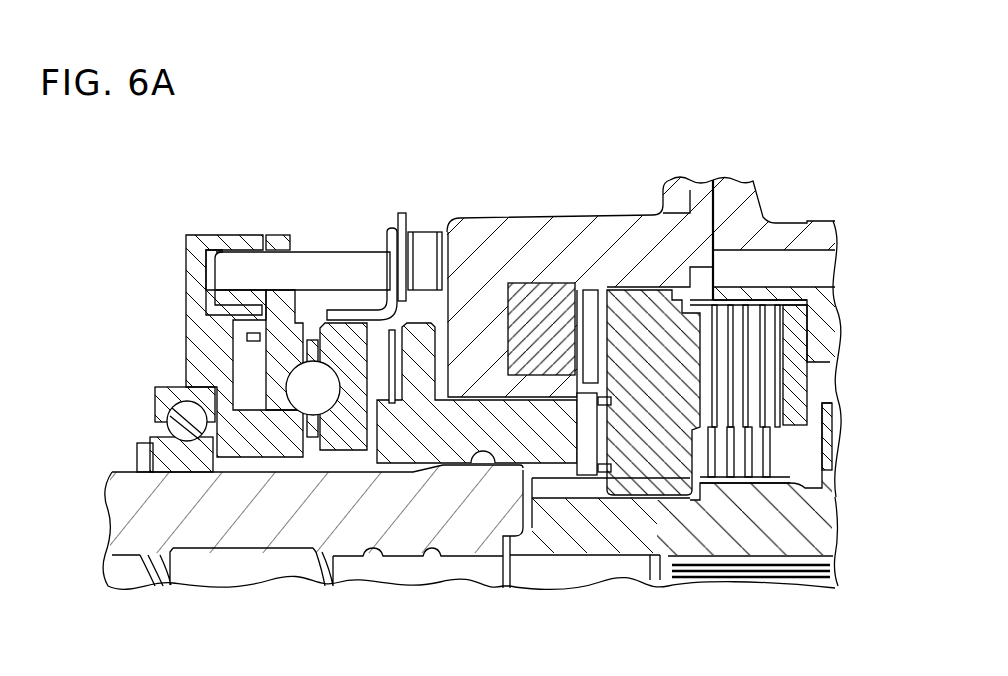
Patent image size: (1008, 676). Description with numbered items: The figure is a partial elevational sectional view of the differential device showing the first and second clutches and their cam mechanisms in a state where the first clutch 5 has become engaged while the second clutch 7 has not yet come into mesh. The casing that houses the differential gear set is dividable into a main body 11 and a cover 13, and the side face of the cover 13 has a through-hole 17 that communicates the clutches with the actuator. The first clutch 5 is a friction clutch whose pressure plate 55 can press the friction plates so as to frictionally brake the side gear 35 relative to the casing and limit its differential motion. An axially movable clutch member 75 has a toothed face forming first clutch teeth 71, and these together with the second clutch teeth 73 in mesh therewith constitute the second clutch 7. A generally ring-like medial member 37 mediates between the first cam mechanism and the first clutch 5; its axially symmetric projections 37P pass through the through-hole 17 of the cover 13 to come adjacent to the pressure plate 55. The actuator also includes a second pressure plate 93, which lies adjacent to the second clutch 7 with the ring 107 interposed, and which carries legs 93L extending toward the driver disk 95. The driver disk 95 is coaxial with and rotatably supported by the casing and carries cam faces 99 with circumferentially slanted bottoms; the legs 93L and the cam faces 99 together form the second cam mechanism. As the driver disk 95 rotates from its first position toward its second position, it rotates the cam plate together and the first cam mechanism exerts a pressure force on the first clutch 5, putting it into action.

The first clutch 5 is at (787, 195).
The second clutch 7 is at (559, 241).
The main body 11 is at (808, 223).
The cover 13 is at (637, 216).
The through-hole 17 is at (497, 465).
The side gear 35 is at (820, 485).
The medial member 37 is at (420, 322).
The projection 37P is at (543, 485).
The pressure plate 55 is at (657, 497).
The first clutch teeth 71 is at (545, 285).
The second clutch teeth 73 is at (590, 335).
The clutch member 75 is at (530, 283).
The second pressure plate 93 is at (392, 232).
The legs 93L is at (320, 250).
The driver disk 95 is at (186, 291).
The cam face 99 is at (214, 268).
The ring 107 is at (402, 213).